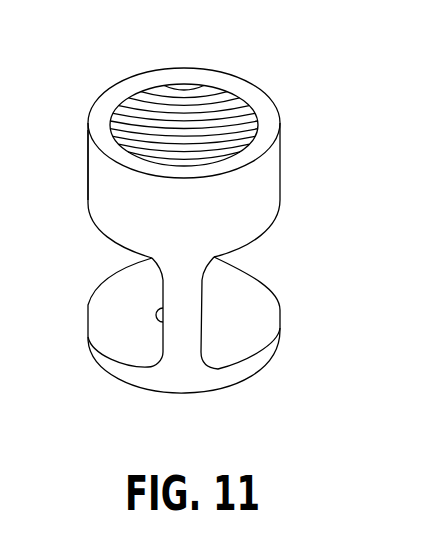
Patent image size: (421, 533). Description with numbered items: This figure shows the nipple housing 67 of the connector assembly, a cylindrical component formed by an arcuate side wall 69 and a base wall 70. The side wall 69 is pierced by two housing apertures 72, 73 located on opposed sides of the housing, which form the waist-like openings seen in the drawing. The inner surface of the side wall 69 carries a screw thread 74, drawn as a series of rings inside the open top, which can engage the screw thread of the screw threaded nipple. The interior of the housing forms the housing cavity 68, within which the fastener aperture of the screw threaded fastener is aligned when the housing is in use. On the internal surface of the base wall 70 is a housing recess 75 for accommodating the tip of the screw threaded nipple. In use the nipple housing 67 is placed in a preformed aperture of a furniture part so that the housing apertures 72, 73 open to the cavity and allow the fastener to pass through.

The nipple housing 67 is at (283, 157).
The housing cavity 68 is at (180, 160).
The side wall 69 is at (98, 178).
The base wall 70 is at (183, 372).
The housing aperture 72 is at (257, 257).
The housing aperture 73 is at (105, 262).
The screw thread 74 is at (215, 103).
The housing recess 75 is at (157, 316).